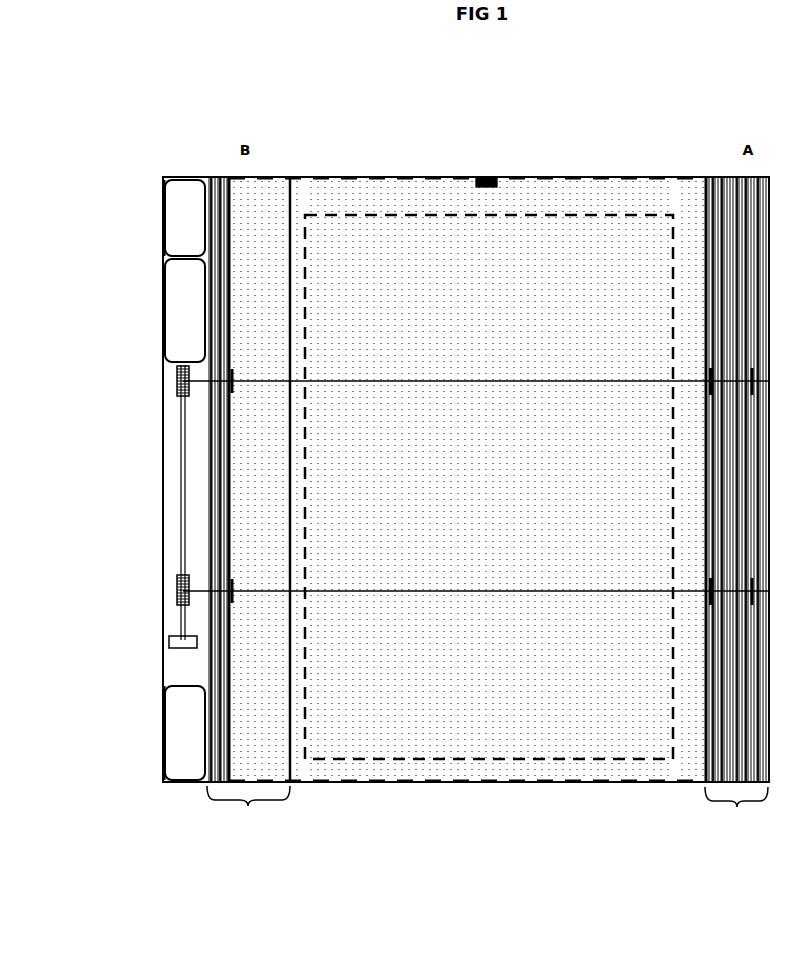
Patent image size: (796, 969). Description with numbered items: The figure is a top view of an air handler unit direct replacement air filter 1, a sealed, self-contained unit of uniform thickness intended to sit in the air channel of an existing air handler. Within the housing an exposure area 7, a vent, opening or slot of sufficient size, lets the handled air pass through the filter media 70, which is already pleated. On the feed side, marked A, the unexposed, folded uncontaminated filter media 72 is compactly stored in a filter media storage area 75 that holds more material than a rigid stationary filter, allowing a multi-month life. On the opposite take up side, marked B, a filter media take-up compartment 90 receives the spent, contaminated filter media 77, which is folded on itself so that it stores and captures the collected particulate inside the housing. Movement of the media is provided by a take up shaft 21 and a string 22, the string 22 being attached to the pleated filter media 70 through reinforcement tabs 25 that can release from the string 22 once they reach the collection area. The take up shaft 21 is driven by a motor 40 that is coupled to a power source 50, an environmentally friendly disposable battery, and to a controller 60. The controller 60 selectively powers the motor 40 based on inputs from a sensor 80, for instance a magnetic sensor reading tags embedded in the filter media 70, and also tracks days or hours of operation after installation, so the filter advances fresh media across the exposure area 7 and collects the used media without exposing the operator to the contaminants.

The air handler unit direct replacement air filter 1 is at (371, 139).
The exposure area 7 is at (556, 212).
The take up shaft 21 is at (180, 463).
The string 22 is at (172, 385).
The reinforcement tabs 25 is at (706, 393).
The motor 40 is at (177, 309).
The power source 50 is at (172, 708).
The controller 60 is at (175, 232).
The filter media 70 is at (546, 497).
The uncontaminated filter media 72 is at (724, 206).
The filter media storage area 75 is at (736, 824).
The contaminated filter media 77 is at (215, 190).
The sensor 80 is at (486, 170).
The filter media take-up compartment 90 is at (248, 823).